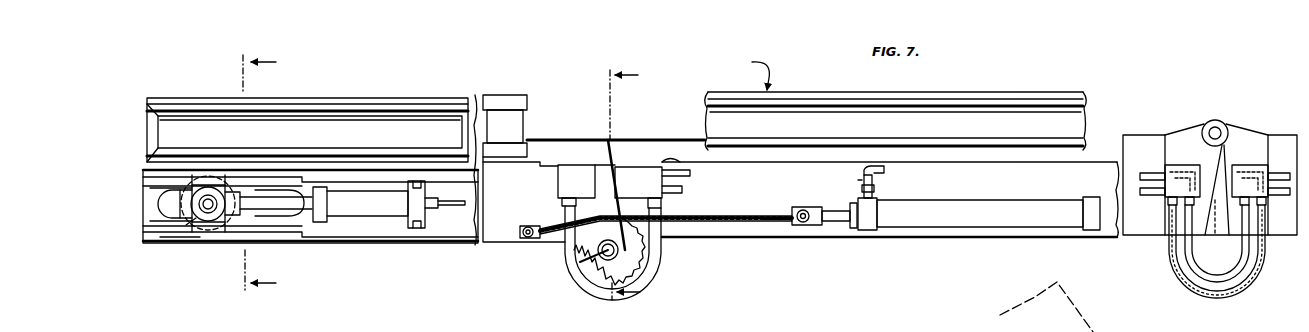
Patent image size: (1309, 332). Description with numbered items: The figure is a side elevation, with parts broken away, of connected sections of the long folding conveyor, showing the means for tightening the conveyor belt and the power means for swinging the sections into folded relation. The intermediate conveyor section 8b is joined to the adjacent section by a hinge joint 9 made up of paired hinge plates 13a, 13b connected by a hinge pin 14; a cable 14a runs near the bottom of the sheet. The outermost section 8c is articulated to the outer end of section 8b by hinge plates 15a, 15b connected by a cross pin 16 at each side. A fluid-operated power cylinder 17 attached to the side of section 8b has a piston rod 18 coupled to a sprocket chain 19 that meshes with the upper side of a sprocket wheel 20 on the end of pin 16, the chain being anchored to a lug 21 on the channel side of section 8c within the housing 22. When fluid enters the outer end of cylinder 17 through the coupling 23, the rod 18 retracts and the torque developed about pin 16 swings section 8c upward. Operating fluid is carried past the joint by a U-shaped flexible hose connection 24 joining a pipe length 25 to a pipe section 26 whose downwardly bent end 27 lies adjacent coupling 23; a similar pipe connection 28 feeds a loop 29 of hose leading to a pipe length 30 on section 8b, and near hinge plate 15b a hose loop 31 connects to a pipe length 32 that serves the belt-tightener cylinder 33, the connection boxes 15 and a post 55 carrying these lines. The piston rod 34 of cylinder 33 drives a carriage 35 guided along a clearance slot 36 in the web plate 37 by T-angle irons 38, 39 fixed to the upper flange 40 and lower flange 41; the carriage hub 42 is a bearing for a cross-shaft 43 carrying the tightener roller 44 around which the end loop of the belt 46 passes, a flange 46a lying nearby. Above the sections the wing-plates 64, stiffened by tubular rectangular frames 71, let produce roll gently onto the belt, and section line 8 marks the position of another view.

The section line 8 is at (506, 173).
The conveyor section 8b is at (1010, 239).
The outermost section 8c is at (417, 244).
The hinge joint 9 is at (1254, 99).
The hinge plate 13a is at (1178, 140).
The hinge plate 13b is at (1250, 135).
The hinge pin 14 is at (1213, 120).
The cable 14a is at (1064, 307).
The connection box 15 is at (640, 178).
The hinge plate 15a is at (599, 172).
The hinge plate 15b is at (678, 184).
The hinge pin 16 is at (592, 258).
The power cylinder 17 is at (956, 205).
The piston rod 18 is at (831, 222).
The sprocket chain 19 is at (748, 222).
The sprocket wheel 20 is at (592, 272).
The lug 21 is at (520, 243).
The housing 22 is at (498, 240).
The coupling 23 is at (875, 188).
The flexible hose connection 24 is at (1263, 265).
The pipe length 25 is at (1283, 196).
The pipe section 26 is at (884, 169).
The downwardly bent end 27 is at (862, 180).
The pipe connection 28 is at (1283, 173).
The loop of flexible hose 29 is at (1206, 293).
The pipe length 30 is at (684, 193).
The hose loop 31 is at (658, 276).
The pipe length 32 is at (443, 200).
The belt-tightener cylinder 33 is at (362, 208).
The piston rod 34 is at (296, 193).
The carriage 35 is at (210, 173).
The clearance slot 36 is at (186, 226).
The web plate 37 is at (150, 191).
The T-angle iron 38 is at (274, 172).
The T-angle iron 39 is at (150, 228).
The upper flange 40 is at (314, 172).
The lower flange 41 is at (317, 244).
The hub 42 is at (204, 214).
The cross-shaft 43 is at (212, 210).
The tightener roller 44 is at (166, 240).
The belt 46 is at (160, 207).
The flange 46a is at (681, 130).
The post 55 is at (550, 150).
The wing-plate 64 is at (425, 100).
The rectangular frame 71 is at (379, 104).